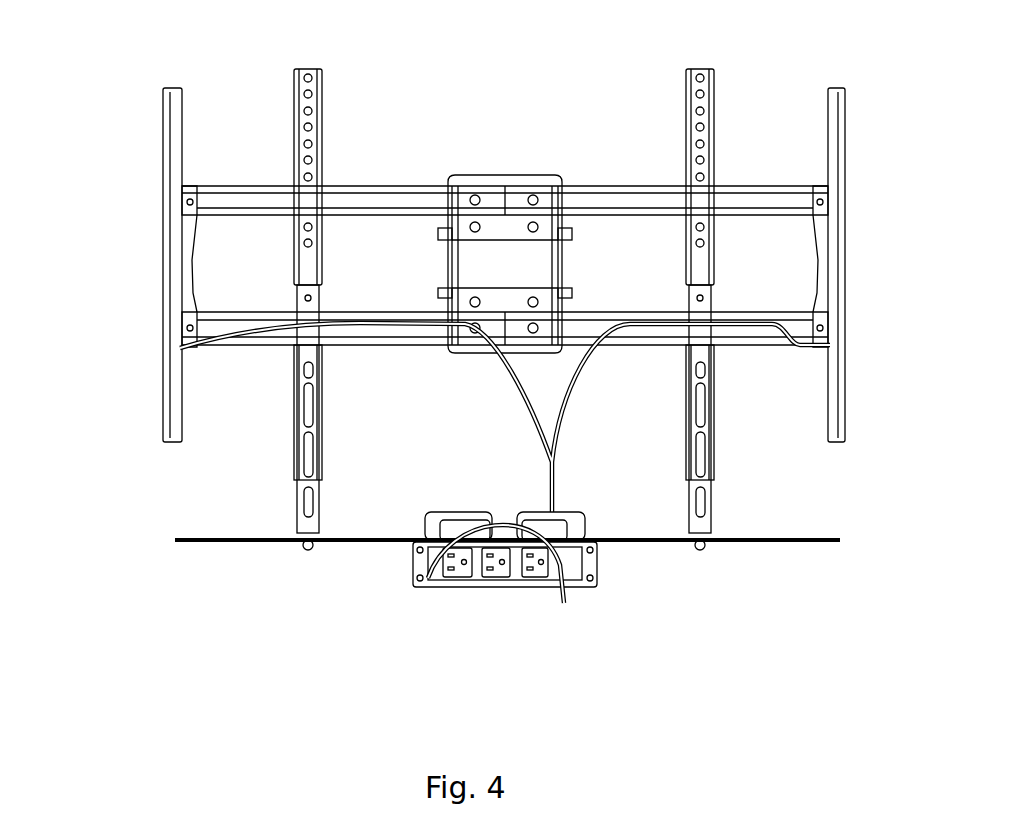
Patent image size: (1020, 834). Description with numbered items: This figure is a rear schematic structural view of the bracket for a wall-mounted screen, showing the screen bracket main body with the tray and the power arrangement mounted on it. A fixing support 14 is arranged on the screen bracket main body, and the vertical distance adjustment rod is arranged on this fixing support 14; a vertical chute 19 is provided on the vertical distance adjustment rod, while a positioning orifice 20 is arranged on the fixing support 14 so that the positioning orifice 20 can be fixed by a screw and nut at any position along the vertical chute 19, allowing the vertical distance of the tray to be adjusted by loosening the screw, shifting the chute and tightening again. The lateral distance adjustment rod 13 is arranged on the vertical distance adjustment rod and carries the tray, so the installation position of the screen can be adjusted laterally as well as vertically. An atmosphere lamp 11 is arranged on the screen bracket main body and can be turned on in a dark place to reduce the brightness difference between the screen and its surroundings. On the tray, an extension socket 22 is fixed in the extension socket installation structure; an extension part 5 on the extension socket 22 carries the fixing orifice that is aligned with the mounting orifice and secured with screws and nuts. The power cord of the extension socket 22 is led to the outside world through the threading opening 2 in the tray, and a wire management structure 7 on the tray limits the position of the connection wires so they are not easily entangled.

The threading opening 2 is at (410, 568).
The extension part 5 is at (590, 555).
The wire management structure 7 is at (612, 548).
The atmosphere lamp 11 is at (168, 203).
The lateral distance adjustment rod 13 is at (200, 539).
The fixing support 14 is at (515, 258).
The vertical chute 19 is at (700, 498).
The positioning orifice 20 is at (300, 105).
The extension socket 22 is at (478, 568).